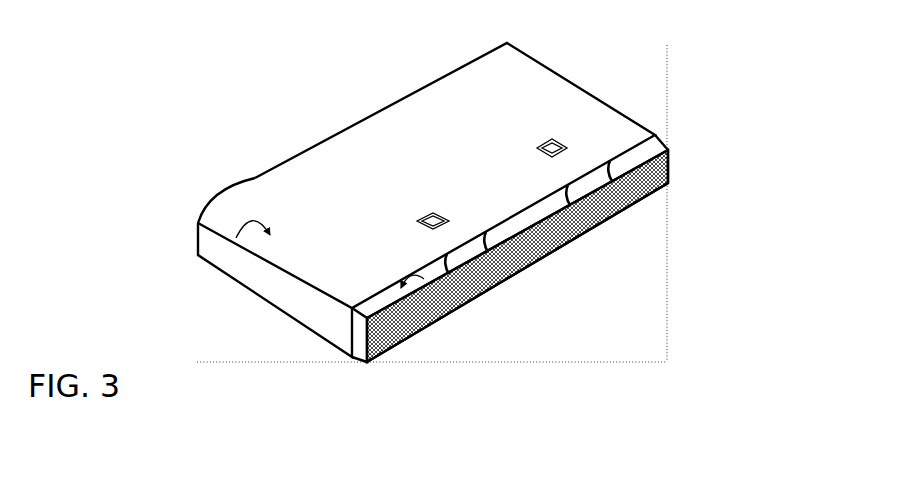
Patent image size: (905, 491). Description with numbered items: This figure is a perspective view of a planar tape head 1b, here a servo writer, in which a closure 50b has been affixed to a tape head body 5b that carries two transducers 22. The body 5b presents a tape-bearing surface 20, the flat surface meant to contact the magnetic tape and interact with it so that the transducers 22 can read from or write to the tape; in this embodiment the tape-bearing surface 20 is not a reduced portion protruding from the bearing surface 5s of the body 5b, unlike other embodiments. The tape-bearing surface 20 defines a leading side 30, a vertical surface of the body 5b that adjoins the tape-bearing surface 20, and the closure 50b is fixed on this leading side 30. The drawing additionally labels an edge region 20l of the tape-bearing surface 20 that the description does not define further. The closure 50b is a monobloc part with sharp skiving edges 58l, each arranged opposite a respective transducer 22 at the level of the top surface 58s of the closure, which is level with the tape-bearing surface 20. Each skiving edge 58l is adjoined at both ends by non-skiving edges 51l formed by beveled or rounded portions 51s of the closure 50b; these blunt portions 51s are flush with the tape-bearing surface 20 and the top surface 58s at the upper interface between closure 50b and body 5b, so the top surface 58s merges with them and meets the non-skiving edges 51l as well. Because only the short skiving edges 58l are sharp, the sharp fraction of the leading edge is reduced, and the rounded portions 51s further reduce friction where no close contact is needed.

The leading side 30 is at (339, 0).
The tape-bearing surface 20 is at (550, 98).
The tape head 1b is at (220, 184).
The transducer 22 is at (425, 220).
The top surface 58s is at (467, 245).
The long side edge of top plate 20l is at (636, 139).
The non-skiving edges 51l is at (648, 157).
The closure 50b is at (673, 160).
The skiving edge 58l is at (625, 207).
The beveled or rounded portions 51s is at (476, 358).
The body 5b is at (196, 240).
The bearing surface 5s is at (238, 227).